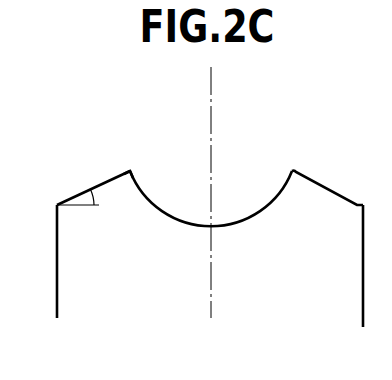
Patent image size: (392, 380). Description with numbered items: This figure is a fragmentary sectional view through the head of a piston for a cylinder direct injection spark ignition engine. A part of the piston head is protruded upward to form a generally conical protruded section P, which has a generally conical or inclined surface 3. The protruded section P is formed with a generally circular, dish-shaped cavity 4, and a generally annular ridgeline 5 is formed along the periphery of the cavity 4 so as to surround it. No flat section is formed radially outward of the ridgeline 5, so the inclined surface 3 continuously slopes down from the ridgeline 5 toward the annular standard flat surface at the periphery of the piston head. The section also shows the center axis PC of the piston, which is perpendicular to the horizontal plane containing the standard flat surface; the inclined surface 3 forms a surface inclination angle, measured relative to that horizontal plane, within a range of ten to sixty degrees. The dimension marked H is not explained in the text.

The inclined surface 3 is at (107, 182).
The cavity 4 is at (156, 208).
The ridgeline 5 is at (131, 169).
The protruded section P is at (303, 175).
The center axis of the piston PC is at (212, 292).
The height H is at (391, 317).